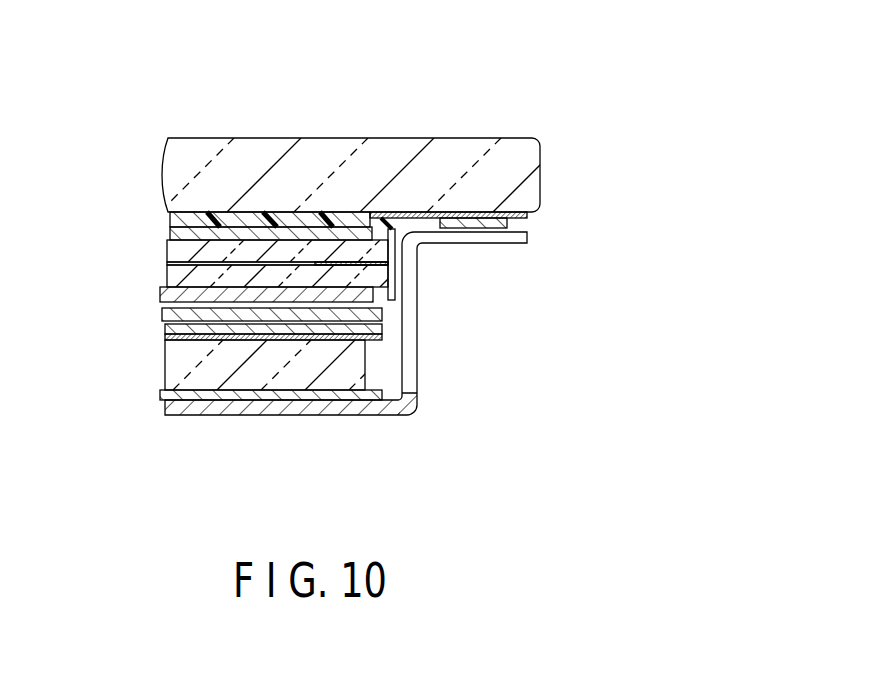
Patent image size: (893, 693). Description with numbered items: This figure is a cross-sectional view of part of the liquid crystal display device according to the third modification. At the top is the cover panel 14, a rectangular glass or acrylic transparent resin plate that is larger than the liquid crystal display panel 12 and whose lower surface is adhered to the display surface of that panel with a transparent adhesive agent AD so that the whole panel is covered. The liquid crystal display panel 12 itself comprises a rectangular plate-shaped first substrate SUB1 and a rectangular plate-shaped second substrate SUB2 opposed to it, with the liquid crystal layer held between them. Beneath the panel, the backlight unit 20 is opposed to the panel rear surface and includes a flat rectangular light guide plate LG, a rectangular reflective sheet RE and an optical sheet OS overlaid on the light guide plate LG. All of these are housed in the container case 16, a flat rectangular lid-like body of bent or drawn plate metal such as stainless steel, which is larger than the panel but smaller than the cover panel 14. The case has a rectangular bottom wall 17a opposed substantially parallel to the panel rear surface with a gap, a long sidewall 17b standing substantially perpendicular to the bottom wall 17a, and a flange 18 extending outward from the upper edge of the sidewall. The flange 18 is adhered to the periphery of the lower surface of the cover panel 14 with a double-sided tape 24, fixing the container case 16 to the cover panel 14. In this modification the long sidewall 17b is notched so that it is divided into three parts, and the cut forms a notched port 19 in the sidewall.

The cover panel 14 is at (389, 160).
The transparent adhesive agent AD is at (287, 220).
The double-sided tape 24 is at (493, 224).
The liquid crystal display panel 12 is at (216, 264).
The second substrate SUB2 is at (168, 246).
The first substrate SUB1 is at (168, 278).
The backlight unit 20 is at (222, 357).
The optical sheet OS is at (150, 308).
The light guide plate LG is at (168, 372).
The reflective sheet RE is at (240, 396).
The flange 18 is at (472, 235).
The notched port 19 is at (407, 332).
The long sidewall 17b is at (413, 382).
The bottom wall 17a is at (235, 403).
The container case 16 is at (356, 429).